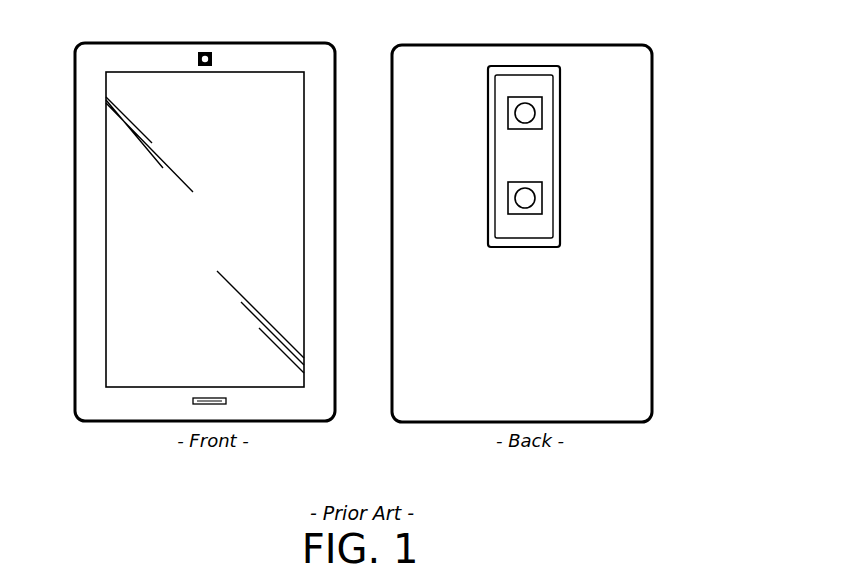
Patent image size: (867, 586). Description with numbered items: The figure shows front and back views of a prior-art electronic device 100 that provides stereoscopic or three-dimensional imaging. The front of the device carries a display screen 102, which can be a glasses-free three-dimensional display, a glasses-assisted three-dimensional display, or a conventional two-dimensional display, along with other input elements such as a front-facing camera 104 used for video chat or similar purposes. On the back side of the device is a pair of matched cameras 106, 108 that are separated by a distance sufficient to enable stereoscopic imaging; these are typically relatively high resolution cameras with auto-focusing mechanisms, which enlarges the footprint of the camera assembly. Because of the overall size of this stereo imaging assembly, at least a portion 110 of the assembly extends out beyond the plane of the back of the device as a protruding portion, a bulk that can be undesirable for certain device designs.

The electronic device 100 is at (771, 86).
The display screen 102 is at (106, 82).
The front-facing camera 104 is at (206, 52).
The matched camera 106 is at (542, 117).
The matched camera 108 is at (542, 202).
The portion of the assembly 110 is at (492, 147).